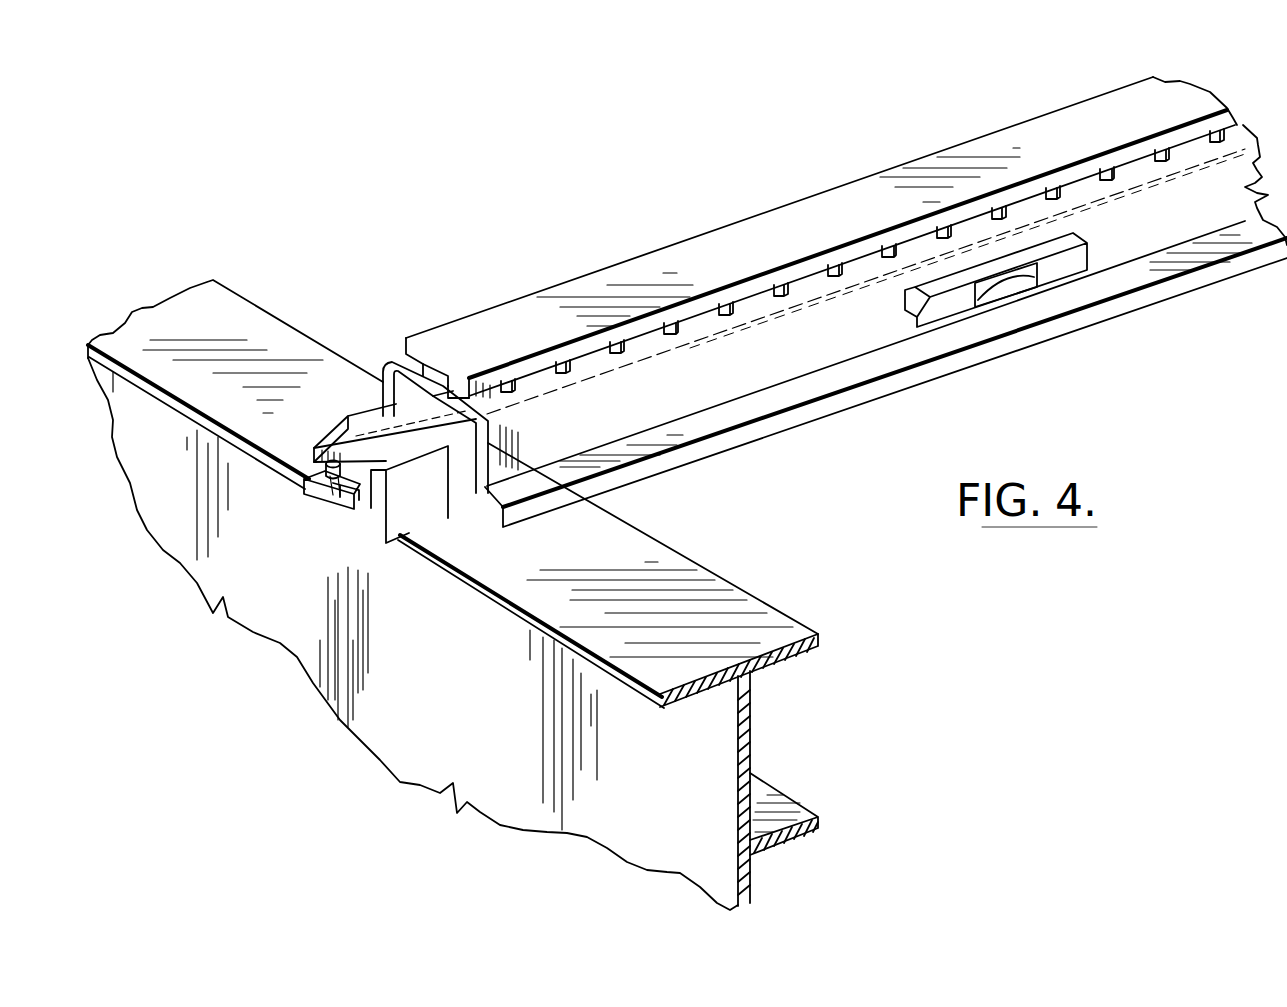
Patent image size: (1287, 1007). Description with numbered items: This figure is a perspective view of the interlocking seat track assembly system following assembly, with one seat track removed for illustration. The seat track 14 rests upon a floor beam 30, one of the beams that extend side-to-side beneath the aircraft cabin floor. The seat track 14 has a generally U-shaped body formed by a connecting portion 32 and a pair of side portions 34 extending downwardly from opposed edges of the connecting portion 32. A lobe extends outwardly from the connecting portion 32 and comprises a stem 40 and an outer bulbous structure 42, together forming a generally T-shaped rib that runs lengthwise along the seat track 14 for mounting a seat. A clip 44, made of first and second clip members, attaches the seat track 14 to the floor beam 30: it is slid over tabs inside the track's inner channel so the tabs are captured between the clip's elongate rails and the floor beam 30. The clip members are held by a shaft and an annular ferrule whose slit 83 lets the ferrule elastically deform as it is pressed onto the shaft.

The seat track 14 is at (1180, 215).
The floor beam 30 is at (800, 823).
The connecting portion 32 is at (405, 362).
The side portions 34 is at (386, 399).
The stem 40 is at (434, 386).
The outer bulbous structure 42 is at (1188, 108).
The clip 44 is at (448, 490).
The slit 83 is at (341, 503).